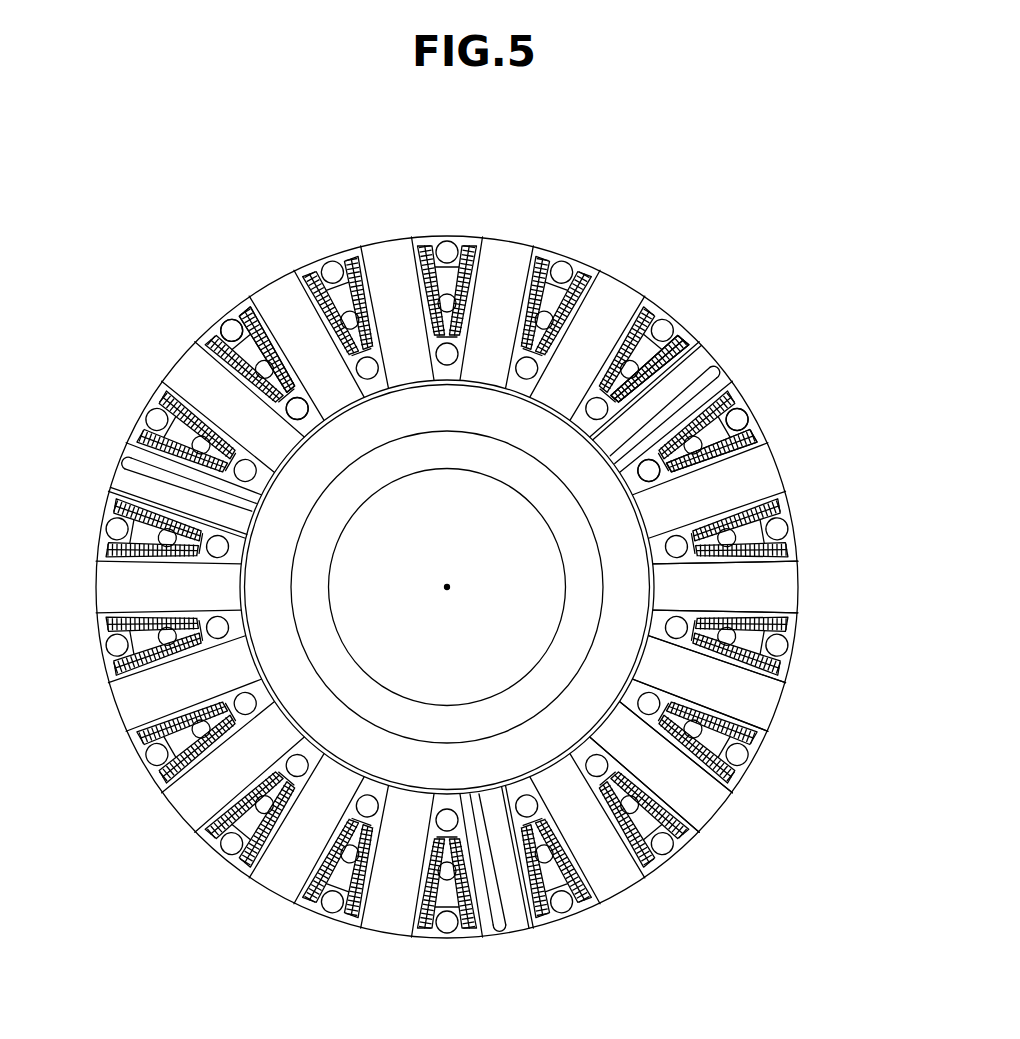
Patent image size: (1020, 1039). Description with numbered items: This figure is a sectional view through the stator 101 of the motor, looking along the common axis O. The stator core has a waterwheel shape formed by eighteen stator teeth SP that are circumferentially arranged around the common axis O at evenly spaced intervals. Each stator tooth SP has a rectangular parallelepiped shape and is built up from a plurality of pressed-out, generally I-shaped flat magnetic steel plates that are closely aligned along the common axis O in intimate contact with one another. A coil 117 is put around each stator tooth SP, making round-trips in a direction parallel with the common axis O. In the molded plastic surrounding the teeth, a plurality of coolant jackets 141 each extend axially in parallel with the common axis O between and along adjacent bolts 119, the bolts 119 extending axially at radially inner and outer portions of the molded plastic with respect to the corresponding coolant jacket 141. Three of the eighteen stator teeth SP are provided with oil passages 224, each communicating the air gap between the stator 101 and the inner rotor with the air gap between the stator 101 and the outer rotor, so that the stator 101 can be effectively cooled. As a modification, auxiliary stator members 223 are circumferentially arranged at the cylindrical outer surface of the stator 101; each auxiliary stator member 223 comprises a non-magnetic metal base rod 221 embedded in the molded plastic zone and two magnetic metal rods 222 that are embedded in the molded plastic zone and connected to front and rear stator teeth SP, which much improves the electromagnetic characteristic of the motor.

The stator 101 is at (572, 222).
The coil 117 is at (688, 842).
The bolt 119 is at (226, 321).
The coolant jacket 141 is at (263, 330).
The non-magnetic metal base rod 221 is at (688, 331).
The magnetic metal rod 222 is at (681, 321).
The auxiliary stator member 223 is at (803, 215).
The oil passage 224 is at (117, 466).
The stator tooth SP is at (800, 589).
The common axis O is at (447, 592).